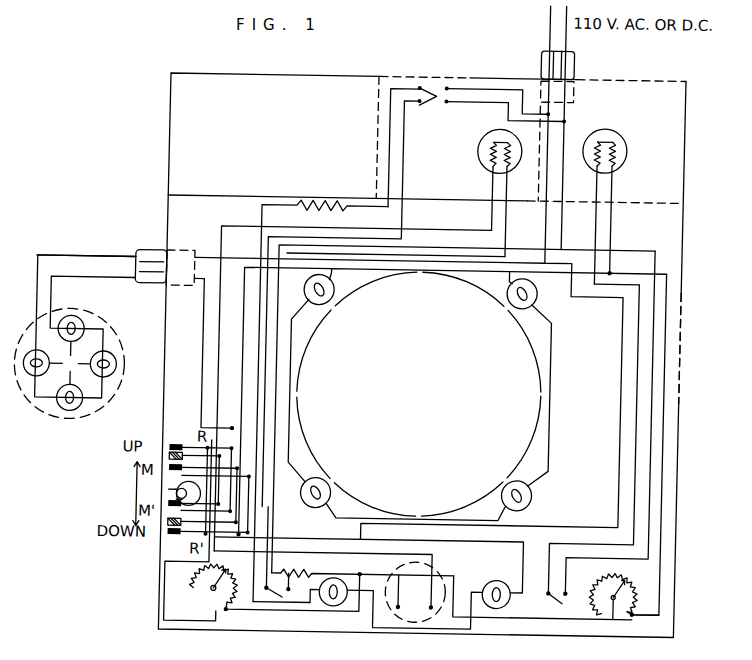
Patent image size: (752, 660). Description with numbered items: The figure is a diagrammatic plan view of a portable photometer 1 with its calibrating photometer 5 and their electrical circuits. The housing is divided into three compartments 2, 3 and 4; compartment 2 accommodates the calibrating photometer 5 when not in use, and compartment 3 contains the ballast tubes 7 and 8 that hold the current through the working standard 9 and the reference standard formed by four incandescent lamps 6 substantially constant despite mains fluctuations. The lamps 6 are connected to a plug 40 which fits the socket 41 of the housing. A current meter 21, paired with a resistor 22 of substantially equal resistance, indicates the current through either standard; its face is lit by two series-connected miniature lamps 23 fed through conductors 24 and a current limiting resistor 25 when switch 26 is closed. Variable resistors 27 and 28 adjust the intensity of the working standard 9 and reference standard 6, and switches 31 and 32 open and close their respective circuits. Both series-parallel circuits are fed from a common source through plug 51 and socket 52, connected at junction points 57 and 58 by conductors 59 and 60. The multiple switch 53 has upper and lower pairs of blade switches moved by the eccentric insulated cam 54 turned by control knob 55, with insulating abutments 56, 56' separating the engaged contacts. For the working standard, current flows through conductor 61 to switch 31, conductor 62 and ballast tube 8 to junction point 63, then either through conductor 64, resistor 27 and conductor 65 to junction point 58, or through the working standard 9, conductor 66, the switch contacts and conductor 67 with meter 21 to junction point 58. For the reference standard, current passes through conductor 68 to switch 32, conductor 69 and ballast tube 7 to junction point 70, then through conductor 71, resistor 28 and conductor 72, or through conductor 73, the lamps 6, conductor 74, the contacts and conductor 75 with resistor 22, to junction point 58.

The portable photometer 1 is at (166, 108).
The compartment 2 is at (327, 83).
The compartment 3 is at (671, 105).
The compartment 4 is at (671, 240).
The calibrating photometer 5 is at (112, 327).
The electric incandescent lamps 6 is at (69, 363).
The ballast tube 7 is at (480, 146).
The ballast tube 8 is at (625, 141).
The working standard 9 is at (337, 297).
The current meter 21 is at (424, 611).
The resistor 22 is at (300, 570).
The miniature electric lamps 23 is at (347, 604).
The conductors 24 is at (392, 164).
The current limiting resistor 25 is at (332, 202).
The switch 26 is at (488, 105).
The variable resistor 27 is at (636, 578).
The variable resistor 28 is at (204, 588).
The switch 31 is at (546, 606).
The switch 32 is at (283, 593).
The plug 40 is at (156, 256).
The socket 41 is at (181, 254).
The plug 51 is at (540, 56).
The socket 52 is at (574, 88).
The multiple switch 53 is at (178, 489).
The eccentrically mounted insulated cam 54 is at (186, 493).
The control knob 55 is at (186, 499).
The insulating abutment 56 is at (161, 461).
The insulating abutment 56' is at (152, 537).
The junction point 57 is at (562, 245).
The junction point 58 is at (380, 566).
The conductor 59 is at (566, 134).
The conductor 60 is at (549, 148).
The conductor 61 is at (674, 434).
The conductor 62 is at (646, 369).
The junction point 63 is at (616, 265).
The conductor 64 is at (664, 403).
The conductor 65 is at (535, 614).
The conductor 66 is at (249, 340).
The conductor 67 is at (299, 540).
The conductor 68 is at (438, 242).
The conductor 69 is at (290, 310).
The junction point 70 is at (511, 245).
The conductor 71 is at (247, 226).
The conductor 72 is at (315, 613).
The conductor 73 is at (364, 266).
The conductor 74 is at (209, 312).
The conductor 75 is at (262, 557).